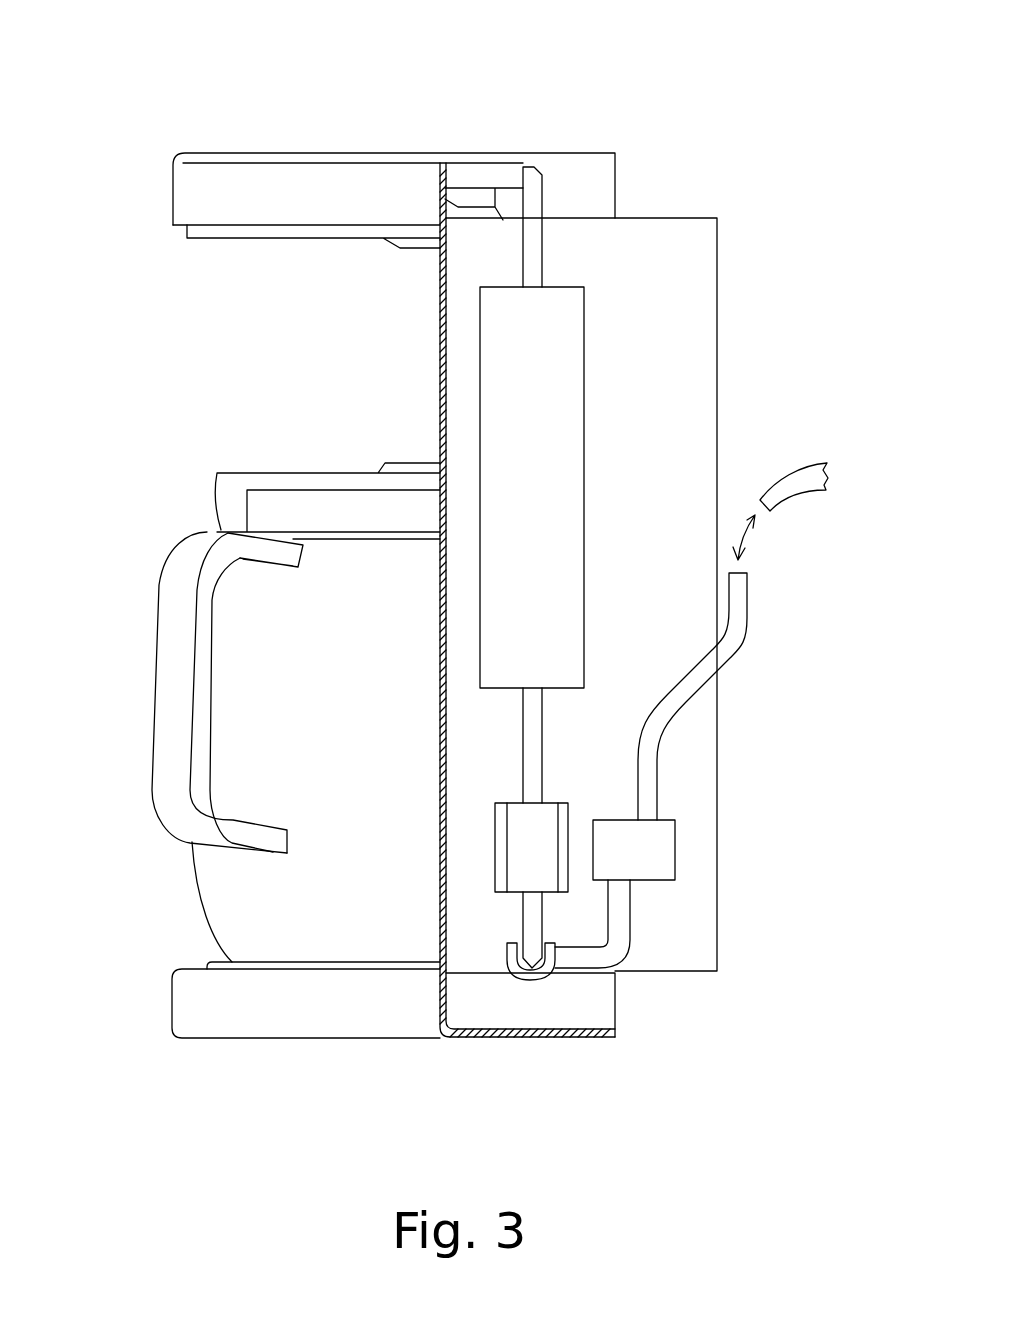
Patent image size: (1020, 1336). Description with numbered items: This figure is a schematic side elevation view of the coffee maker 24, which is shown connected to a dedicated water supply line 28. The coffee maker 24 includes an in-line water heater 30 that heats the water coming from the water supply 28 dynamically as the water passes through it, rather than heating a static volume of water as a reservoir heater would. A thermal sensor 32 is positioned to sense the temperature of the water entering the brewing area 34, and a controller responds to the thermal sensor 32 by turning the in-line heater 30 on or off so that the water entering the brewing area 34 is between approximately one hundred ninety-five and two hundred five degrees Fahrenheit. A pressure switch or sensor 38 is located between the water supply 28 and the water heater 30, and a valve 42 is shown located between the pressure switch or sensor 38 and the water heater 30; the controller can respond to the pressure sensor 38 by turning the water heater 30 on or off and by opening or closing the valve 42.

The coffee maker 24 is at (158, 68).
The dedicated water supply line 28 is at (785, 498).
The in-line water heater 30 is at (584, 375).
The thermal sensor 32 is at (468, 199).
The brewing area 34 is at (406, 287).
The pressure switch or sensor 38 is at (650, 869).
The valve 42 is at (527, 862).